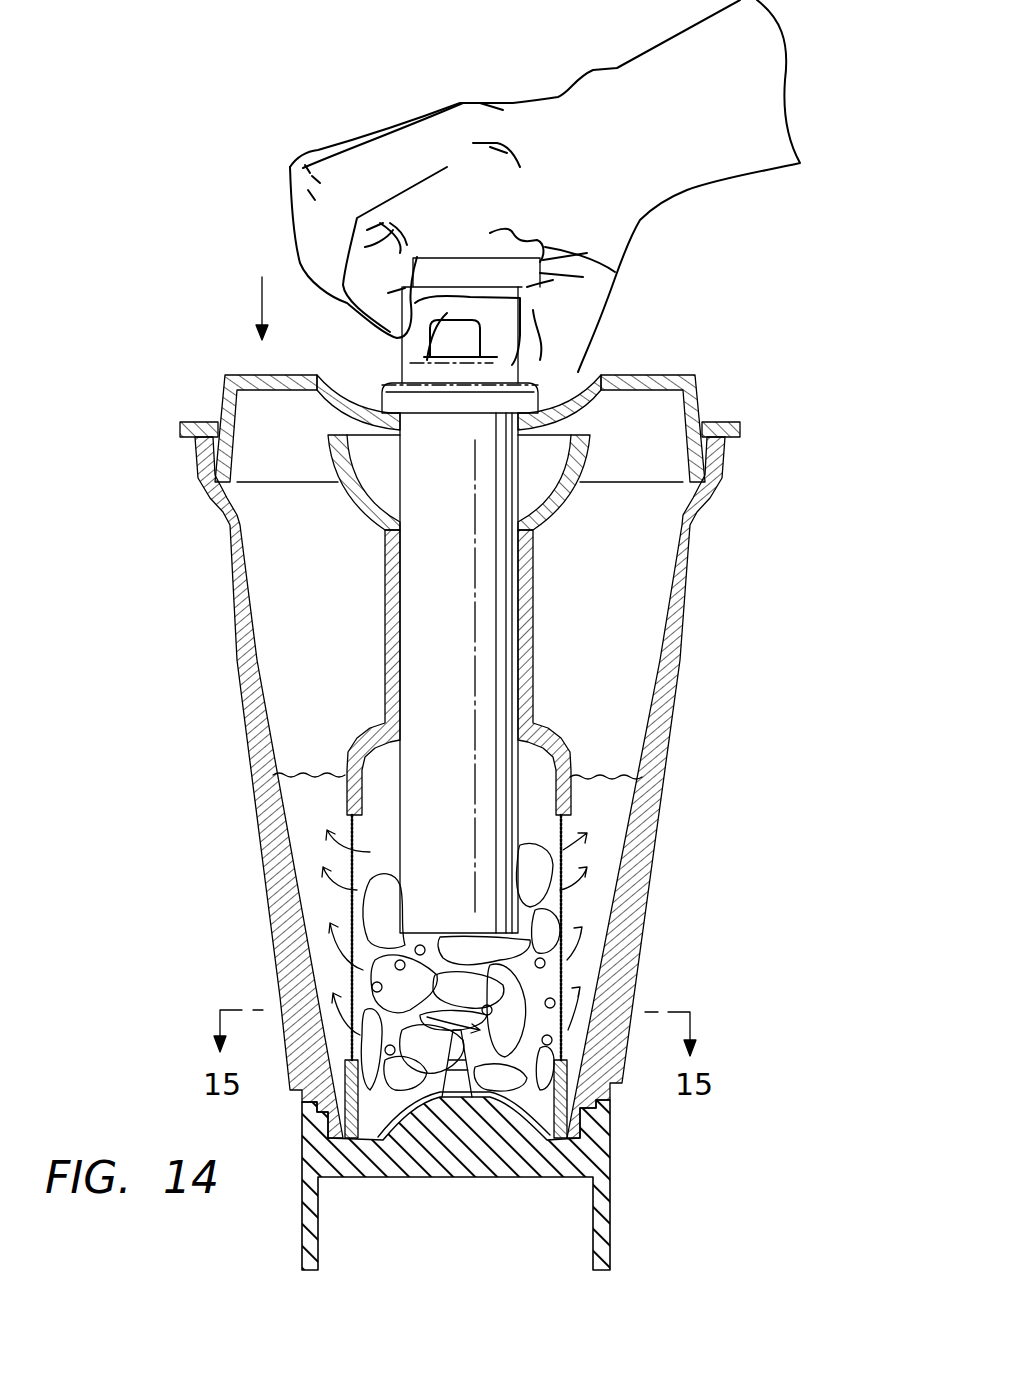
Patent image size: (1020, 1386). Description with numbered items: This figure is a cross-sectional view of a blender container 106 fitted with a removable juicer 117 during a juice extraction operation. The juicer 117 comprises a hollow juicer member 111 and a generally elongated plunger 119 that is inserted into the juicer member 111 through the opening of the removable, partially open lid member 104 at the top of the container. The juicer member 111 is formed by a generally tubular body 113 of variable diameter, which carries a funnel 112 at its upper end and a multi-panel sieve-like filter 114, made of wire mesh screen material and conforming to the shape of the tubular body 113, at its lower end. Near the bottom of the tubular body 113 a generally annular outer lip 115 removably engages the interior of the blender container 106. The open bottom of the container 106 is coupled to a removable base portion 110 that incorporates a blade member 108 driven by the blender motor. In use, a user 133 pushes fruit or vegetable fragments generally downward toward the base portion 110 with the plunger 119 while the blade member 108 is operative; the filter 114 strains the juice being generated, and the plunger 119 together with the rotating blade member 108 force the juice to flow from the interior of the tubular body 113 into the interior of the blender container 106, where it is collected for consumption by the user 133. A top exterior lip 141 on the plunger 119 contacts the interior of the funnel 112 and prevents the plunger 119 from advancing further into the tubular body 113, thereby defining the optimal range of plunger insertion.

The removable lid member 104 is at (575, 370).
The blender container 106 is at (667, 763).
The blade member 108 is at (455, 1060).
The removable base portion 110 is at (612, 1188).
The hollow juicer member 111 is at (385, 622).
The funnel 112 is at (598, 462).
The tubular body 113 is at (537, 568).
The multi-panel sieve-like filter 114 is at (350, 897).
The annular outer lip 115 is at (342, 1085).
The removable juicer 117 is at (567, 677).
The plunger 119 is at (457, 455).
The user 133 is at (658, 90).
The top exterior lip 141 is at (397, 400).